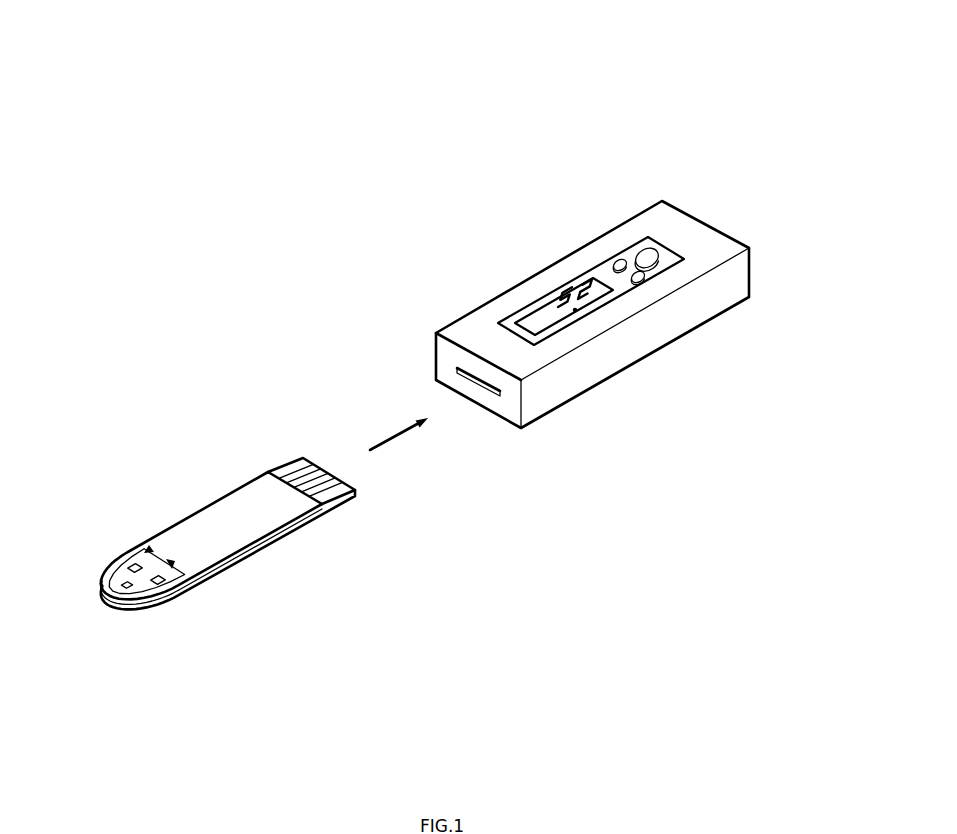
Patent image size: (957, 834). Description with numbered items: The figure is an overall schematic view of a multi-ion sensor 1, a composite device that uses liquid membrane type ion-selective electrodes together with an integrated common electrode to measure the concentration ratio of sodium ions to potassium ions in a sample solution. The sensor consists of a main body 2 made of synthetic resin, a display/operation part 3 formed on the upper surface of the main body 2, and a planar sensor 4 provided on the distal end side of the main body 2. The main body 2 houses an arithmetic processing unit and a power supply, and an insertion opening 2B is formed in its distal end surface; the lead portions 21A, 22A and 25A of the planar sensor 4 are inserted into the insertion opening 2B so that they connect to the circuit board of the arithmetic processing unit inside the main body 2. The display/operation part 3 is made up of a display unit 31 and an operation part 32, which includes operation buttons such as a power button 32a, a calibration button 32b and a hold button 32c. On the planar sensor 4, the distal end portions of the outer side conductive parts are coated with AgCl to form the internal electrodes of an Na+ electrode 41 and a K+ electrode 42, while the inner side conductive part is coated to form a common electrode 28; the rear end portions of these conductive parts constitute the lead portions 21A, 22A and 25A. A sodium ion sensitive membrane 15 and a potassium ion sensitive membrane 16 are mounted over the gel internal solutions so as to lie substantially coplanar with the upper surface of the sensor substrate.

The multi-ion sensor 1 is at (658, 90).
The main body 2 is at (645, 307).
The insertion opening 2B is at (484, 392).
The display/operation part 3 is at (676, 252).
The display unit 31 is at (625, 292).
The operation part 32 is at (703, 223).
The power button 32a is at (621, 260).
The calibration button 32b is at (656, 250).
The hold button 32c is at (648, 283).
The planar sensor 4 is at (237, 518).
The sodium ion sensitive membrane 15 is at (130, 566).
The potassium ion sensitive membrane 16 is at (172, 578).
The common electrode 28 is at (121, 583).
The lead portion 21A is at (313, 468).
The lead portion 22A is at (355, 489).
The lead portion 25A is at (337, 473).
The Na+ electrode 41 is at (152, 551).
The K+ electrode 42 is at (171, 564).